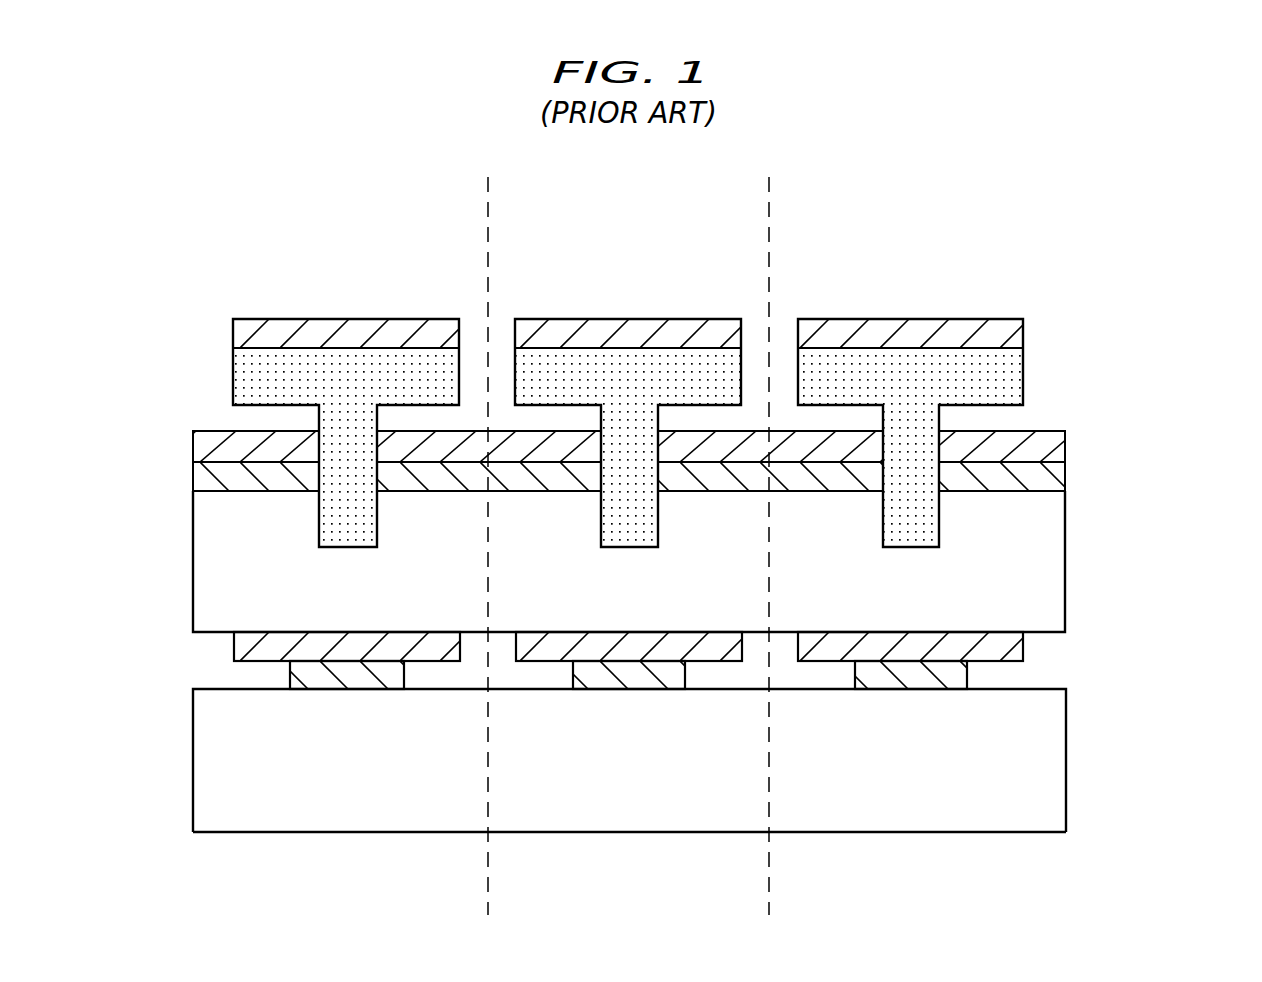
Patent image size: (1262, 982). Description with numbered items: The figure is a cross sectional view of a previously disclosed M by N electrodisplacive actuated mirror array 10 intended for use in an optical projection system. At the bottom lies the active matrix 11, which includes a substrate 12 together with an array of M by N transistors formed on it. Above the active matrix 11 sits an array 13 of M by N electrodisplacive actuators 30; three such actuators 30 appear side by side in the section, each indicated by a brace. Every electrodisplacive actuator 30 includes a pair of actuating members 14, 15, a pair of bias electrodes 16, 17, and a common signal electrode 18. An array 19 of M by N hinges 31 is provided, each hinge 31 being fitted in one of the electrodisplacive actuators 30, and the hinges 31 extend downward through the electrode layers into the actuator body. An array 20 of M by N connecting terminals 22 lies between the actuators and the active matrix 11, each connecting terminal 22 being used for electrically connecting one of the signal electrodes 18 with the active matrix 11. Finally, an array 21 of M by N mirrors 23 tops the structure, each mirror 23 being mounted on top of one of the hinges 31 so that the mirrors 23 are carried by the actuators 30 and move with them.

The electrodisplacive actuated mirror array 10 is at (1055, 273).
The active matrix 11 is at (1082, 687).
The substrate 12 is at (892, 804).
The array of electrodisplacive actuators 13 is at (1081, 428).
The actuating member 14 is at (565, 585).
The actuating member 15 is at (722, 585).
The bias electrode 16 is at (507, 472).
The bias electrode 17 is at (753, 473).
The common signal electrode 18 is at (705, 650).
The array of hinges 19 is at (1158, 343).
The array of connecting terminals 20 is at (1117, 660).
The array of mirrors 21 is at (1079, 318).
The connecting terminal 22 is at (592, 681).
The mirror 23 is at (633, 330).
The electrodisplacive actuator 30 is at (459, 222).
The hinge 31 is at (594, 378).